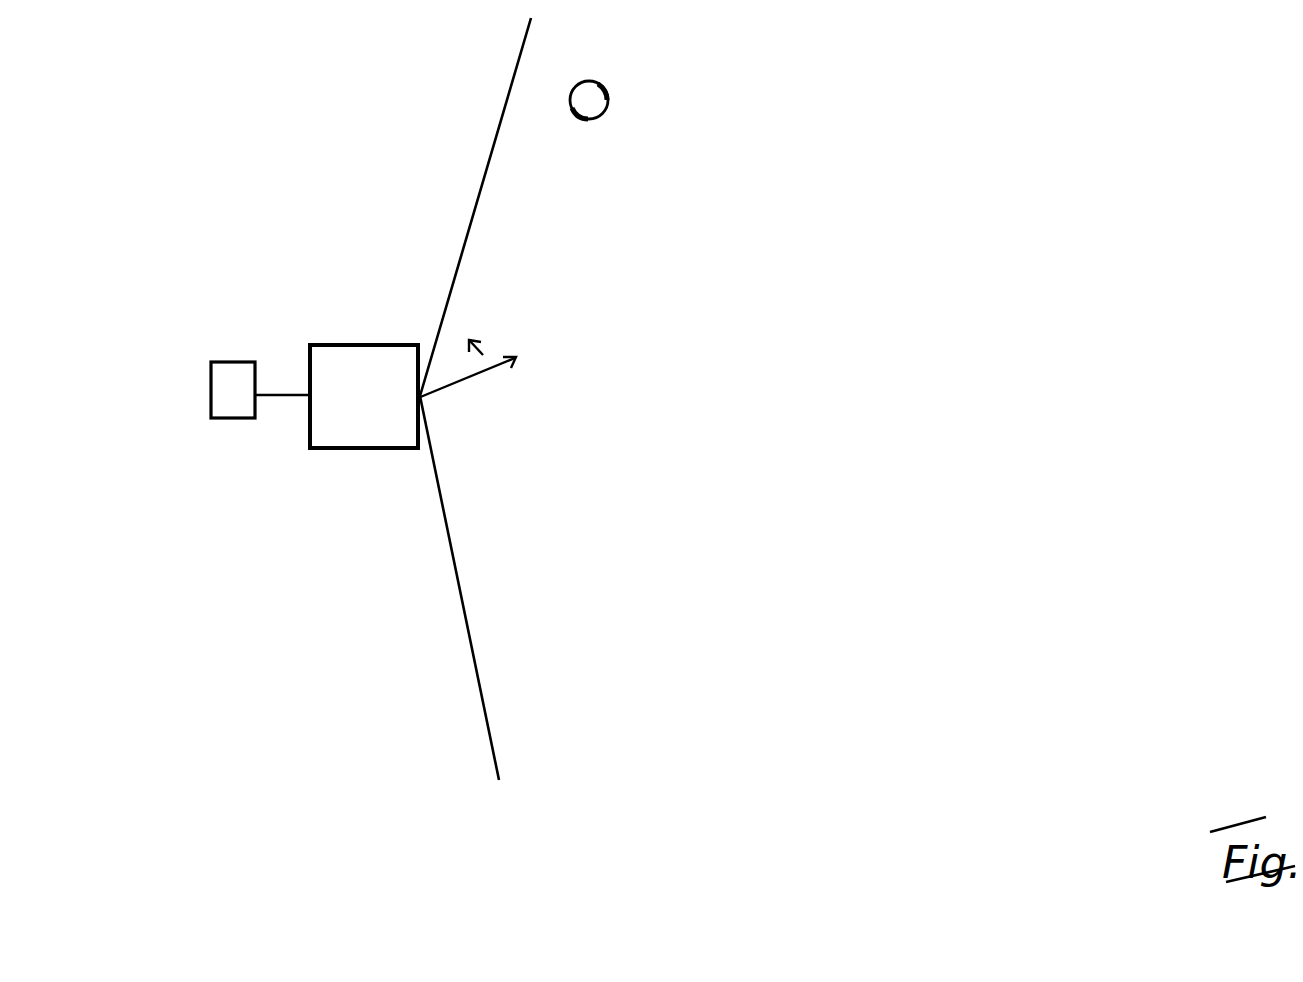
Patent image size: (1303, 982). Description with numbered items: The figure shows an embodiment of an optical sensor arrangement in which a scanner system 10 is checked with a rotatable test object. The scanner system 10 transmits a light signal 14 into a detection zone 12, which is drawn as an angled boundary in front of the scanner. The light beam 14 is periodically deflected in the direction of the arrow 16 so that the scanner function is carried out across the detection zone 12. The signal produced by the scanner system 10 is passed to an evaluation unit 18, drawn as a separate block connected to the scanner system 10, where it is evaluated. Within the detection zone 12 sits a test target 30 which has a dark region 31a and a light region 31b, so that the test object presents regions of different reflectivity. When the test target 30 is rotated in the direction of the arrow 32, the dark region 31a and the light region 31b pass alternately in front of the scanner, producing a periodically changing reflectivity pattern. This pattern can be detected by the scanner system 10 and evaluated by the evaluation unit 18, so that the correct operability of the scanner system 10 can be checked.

The scanner system 10 is at (376, 362).
The detection zone 12 is at (553, 624).
The light signal 14 is at (452, 386).
The arrow 16 is at (494, 410).
The evaluation unit 18 is at (232, 405).
The test target 30 is at (604, 113).
The dark region 31a is at (576, 114).
The light region 31b is at (570, 86).
The arrow 32 is at (615, 53).